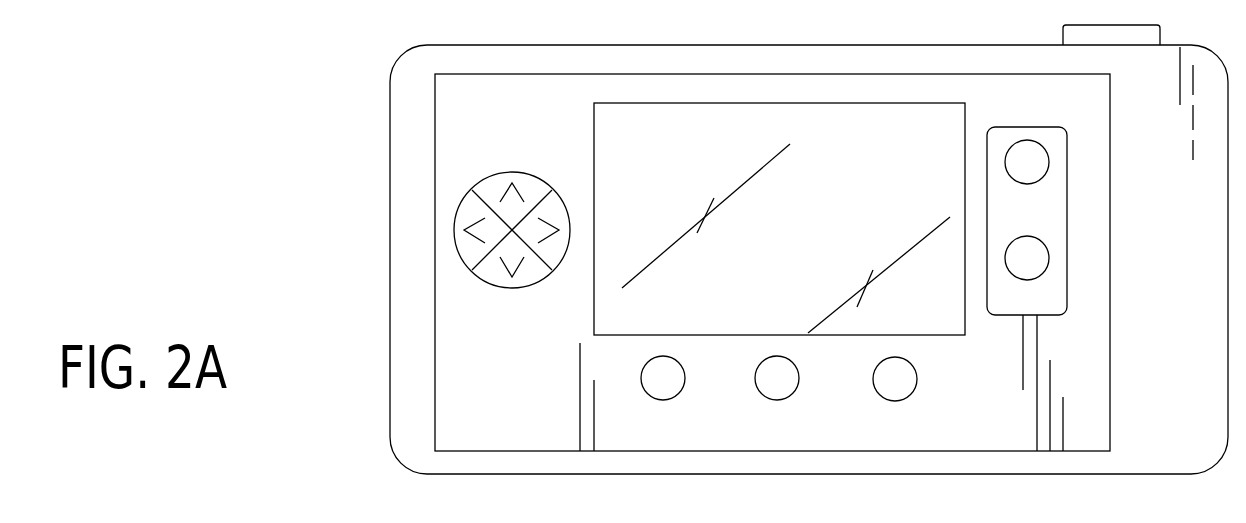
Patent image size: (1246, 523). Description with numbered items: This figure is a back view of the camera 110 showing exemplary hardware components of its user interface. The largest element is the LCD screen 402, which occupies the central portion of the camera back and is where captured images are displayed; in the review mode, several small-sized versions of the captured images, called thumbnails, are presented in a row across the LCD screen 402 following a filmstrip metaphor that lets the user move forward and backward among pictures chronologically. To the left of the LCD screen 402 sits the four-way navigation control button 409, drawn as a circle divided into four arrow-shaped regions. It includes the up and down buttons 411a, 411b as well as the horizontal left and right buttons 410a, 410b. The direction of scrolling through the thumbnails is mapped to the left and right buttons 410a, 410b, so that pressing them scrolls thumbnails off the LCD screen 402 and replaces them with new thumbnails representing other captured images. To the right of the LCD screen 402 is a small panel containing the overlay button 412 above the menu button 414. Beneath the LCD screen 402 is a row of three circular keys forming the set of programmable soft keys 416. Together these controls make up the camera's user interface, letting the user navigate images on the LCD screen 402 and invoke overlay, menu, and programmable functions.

The camera 110 is at (162, 243).
The LCD screen 402 is at (806, 230).
The four-way navigation control button 409 is at (477, 159).
The left button 410a is at (466, 250).
The right button 410b is at (497, 212).
The up button 411a is at (532, 183).
The down button 411b is at (490, 277).
The overlay button 412 is at (1049, 163).
The menu button 414 is at (1049, 258).
The programmable soft keys 416 is at (910, 398).